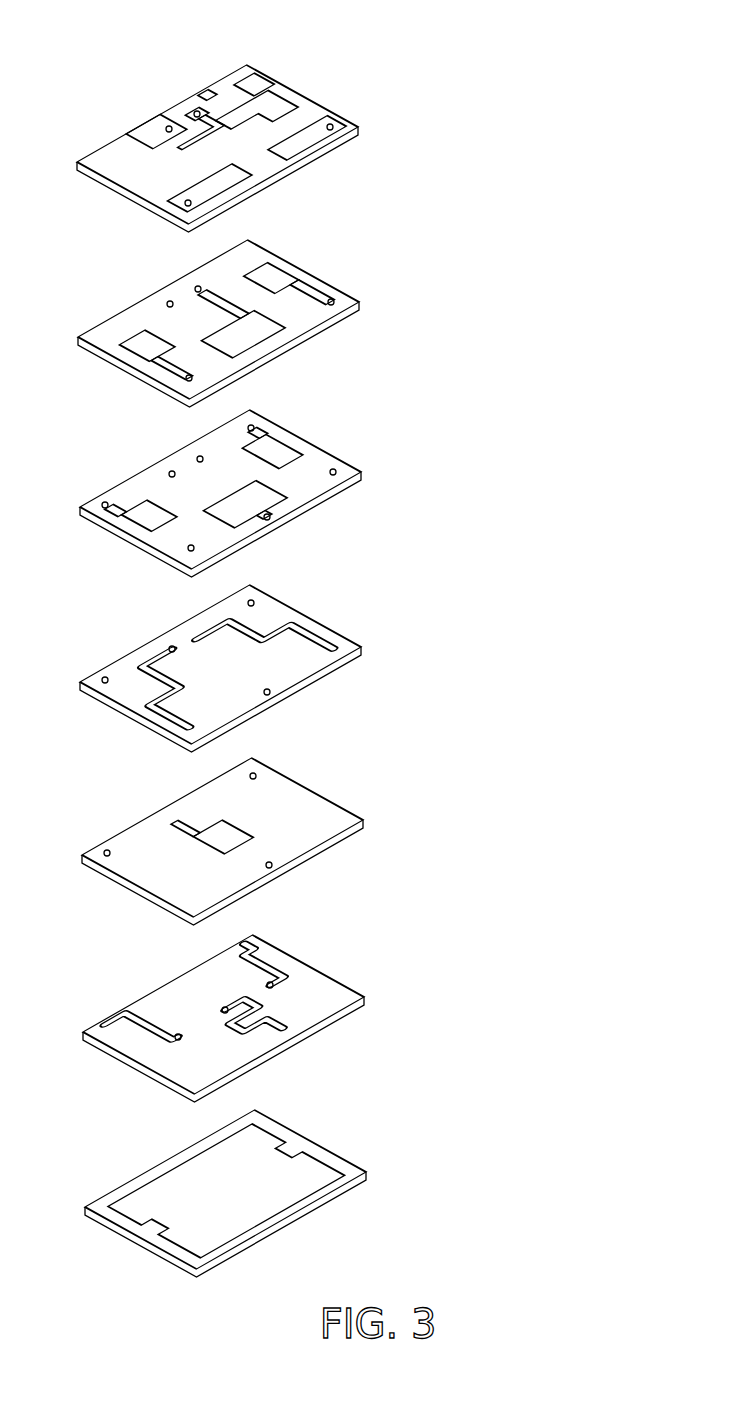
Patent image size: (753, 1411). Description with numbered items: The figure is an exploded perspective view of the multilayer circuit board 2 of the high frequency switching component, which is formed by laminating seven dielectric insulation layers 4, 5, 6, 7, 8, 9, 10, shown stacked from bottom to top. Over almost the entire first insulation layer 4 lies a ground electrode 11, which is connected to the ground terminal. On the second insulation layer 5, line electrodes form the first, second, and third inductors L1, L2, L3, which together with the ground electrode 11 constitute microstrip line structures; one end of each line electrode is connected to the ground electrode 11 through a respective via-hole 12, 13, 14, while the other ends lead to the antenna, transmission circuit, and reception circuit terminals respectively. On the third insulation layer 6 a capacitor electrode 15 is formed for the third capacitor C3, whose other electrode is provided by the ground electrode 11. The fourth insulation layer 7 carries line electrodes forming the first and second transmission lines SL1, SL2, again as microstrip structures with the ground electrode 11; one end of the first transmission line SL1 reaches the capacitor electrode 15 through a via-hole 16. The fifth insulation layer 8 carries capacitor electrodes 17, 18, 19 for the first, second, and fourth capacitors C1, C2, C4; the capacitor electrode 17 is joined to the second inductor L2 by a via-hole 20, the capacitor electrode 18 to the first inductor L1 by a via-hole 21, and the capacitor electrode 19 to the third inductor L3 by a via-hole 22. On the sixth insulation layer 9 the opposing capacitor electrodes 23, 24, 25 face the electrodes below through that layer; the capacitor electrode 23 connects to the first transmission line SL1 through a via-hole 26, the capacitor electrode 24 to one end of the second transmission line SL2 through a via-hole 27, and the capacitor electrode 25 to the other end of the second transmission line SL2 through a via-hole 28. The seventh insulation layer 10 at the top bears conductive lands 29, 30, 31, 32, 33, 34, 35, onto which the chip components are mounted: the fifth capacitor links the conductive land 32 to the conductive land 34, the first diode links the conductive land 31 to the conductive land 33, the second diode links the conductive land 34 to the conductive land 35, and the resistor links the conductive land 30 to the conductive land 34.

The multilayer circuit board 2 is at (215, 645).
The first insulation layer 4 is at (368, 1178).
The second insulation layer 5 is at (366, 1002).
The third insulation layer 6 is at (366, 826).
The fourth insulation layer 7 is at (364, 650).
The fifth insulation layer 8 is at (364, 476).
The sixth insulation layer 9 is at (362, 306).
The seventh insulation layer 10 is at (360, 133).
The ground electrode 11 is at (200, 1173).
The via-hole 12 is at (222, 1008).
The via-hole 13 is at (176, 1040).
The via-hole 14 is at (272, 987).
The capacitor electrode 15 is at (200, 830).
The via-hole 16 is at (166, 127).
The capacitor electrode 17 is at (130, 510).
The capacitor electrode 18 is at (278, 500).
The capacitor electrode 19 is at (300, 447).
The via-hole 20 is at (102, 504).
The via-hole 21 is at (269, 520).
The via-hole 22 is at (253, 425).
The capacitor electrode 23 is at (125, 340).
The capacitor electrode 24 is at (275, 333).
The capacitor electrode 25 is at (298, 280).
The via-hole 26 is at (186, 206).
The via-hole 27 is at (195, 111).
The via-hole 28 is at (333, 124).
The conductive land 29 is at (140, 140).
The conductive land 30 is at (207, 97).
The conductive land 31 is at (127, 182).
The conductive land 32 is at (256, 72).
The conductive land 33 is at (238, 177).
The conductive land 34 is at (292, 104).
The conductive land 35 is at (309, 130).
The first capacitor C1 is at (148, 431).
The second capacitor C2 is at (244, 419).
The third capacitor C3 is at (223, 837).
The fourth capacitor C4 is at (272, 366).
The first inductor L1 is at (273, 1037).
The second inductor L2 is at (137, 1022).
The third inductor L3 is at (287, 975).
The first transmission line SL1 is at (142, 663).
The second transmission line SL2 is at (338, 642).